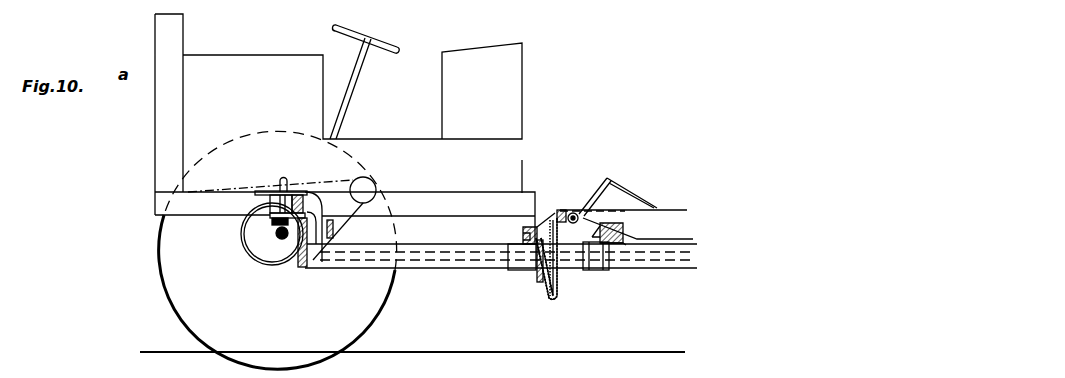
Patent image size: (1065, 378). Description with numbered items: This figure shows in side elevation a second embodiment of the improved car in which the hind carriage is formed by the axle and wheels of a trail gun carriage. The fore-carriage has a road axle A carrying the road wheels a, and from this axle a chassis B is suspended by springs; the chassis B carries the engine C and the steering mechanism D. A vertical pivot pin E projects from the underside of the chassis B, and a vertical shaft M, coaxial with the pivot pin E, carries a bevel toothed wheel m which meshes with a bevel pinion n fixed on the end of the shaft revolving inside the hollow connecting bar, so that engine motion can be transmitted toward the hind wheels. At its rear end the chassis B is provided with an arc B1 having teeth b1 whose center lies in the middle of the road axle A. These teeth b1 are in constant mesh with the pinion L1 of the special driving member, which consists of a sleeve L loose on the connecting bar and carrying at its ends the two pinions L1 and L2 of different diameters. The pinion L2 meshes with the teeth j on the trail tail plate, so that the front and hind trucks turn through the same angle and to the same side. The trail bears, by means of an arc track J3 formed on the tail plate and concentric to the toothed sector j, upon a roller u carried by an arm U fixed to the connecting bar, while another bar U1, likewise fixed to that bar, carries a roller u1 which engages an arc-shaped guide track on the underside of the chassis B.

The engine C is at (268, 66).
The steering mechanism D is at (352, 83).
The chassis B is at (160, 203).
The road wheel a is at (185, 284).
The road axle A is at (279, 240).
The vertical pivot pin E is at (270, 208).
The vertical shaft M is at (279, 180).
The bevel toothed wheel m is at (276, 214).
The bevel pinion n is at (294, 245).
The arc B1 is at (523, 232).
The roller u1 is at (528, 230).
The bar U1 is at (508, 240).
The pinion L1 is at (537, 262).
The sleeve L is at (543, 278).
The pinion L2 is at (558, 287).
The teeth b1 is at (539, 238).
The teeth j is at (556, 214).
The roller u is at (610, 226).
The arc track J3 is at (624, 233).
The arm U is at (601, 268).